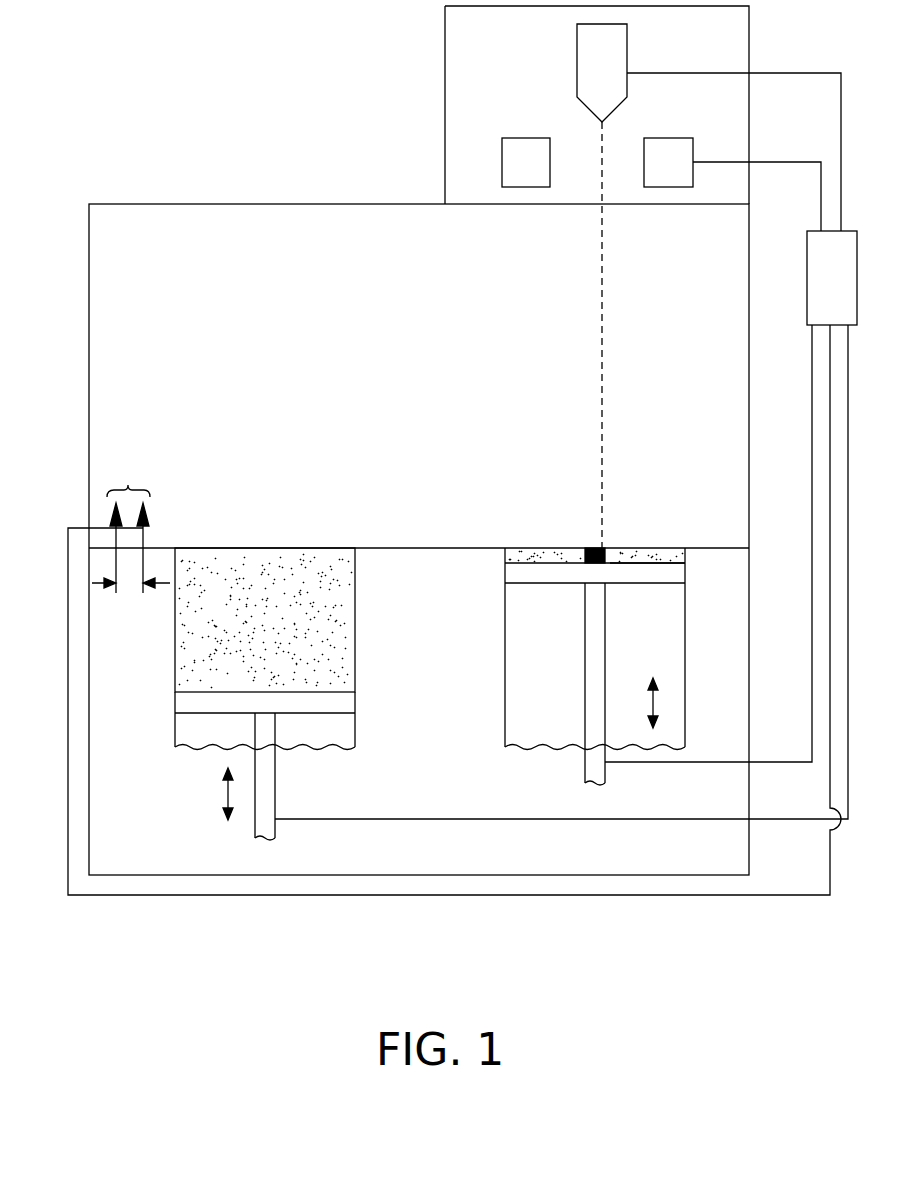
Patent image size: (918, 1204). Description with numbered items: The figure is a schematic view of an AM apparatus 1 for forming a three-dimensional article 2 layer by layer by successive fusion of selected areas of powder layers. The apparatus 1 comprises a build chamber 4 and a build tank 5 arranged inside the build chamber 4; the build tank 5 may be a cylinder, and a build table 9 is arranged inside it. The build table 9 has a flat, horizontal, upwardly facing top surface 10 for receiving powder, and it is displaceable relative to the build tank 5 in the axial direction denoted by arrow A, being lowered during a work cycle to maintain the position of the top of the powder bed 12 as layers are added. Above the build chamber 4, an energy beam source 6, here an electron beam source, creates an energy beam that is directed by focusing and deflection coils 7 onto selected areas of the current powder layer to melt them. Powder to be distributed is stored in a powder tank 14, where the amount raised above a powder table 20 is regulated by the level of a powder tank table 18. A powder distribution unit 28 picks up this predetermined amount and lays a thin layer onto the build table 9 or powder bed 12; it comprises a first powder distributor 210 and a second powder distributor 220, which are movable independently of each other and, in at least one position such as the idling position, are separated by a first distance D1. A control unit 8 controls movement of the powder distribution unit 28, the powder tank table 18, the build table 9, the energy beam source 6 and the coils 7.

The AM apparatus 1 is at (488, 105).
The three-dimensional article 2 is at (592, 546).
The build chamber 4 is at (88, 360).
The build tank 5 is at (687, 620).
The energy beam source 6 is at (709, 127).
The focusing coils and deflection coils 7 is at (732, 184).
The control unit 8 is at (462, 563).
The build table 9 is at (548, 580).
The top surface 10 is at (643, 552).
The powder bed 12 is at (533, 550).
The powder tank 14 is at (357, 620).
The powder tank table 18 is at (308, 712).
The powder table 20 is at (398, 548).
The powder distribution unit 28 is at (128, 477).
The first powder distributor 210 is at (112, 515).
The second powder distributor 220 is at (150, 515).
The arrow A is at (660, 700).
The first distance D1 is at (131, 586).